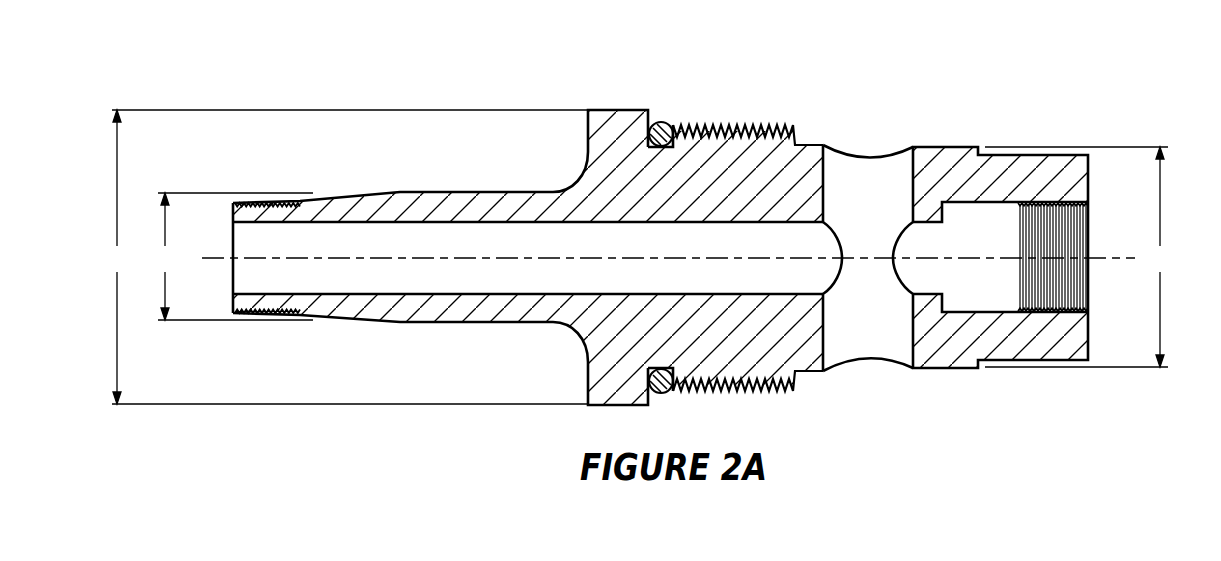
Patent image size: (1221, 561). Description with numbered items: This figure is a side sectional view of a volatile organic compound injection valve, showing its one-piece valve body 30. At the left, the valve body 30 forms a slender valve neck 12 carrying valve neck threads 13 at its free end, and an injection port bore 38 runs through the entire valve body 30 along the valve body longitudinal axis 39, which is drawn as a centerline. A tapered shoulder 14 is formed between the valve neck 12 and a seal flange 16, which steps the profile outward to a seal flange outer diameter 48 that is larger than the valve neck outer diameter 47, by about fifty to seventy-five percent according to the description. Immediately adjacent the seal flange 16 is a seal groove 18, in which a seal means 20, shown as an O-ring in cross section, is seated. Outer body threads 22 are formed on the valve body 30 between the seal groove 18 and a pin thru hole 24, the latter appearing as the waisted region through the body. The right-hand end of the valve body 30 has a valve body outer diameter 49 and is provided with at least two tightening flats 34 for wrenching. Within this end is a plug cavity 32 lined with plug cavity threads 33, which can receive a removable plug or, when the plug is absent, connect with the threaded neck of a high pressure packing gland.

The valve body 30 is at (204, 76).
The valve neck 12 is at (452, 191).
The valve neck threads 13 is at (266, 198).
The tapered shoulder 14 is at (577, 178).
The seal flange 16 is at (618, 108).
The seal groove 18 is at (662, 366).
The seal means 20 is at (660, 121).
The outer body threads 22 is at (756, 126).
The pin thru hole 24 is at (869, 151).
The plug cavity 32 is at (1094, 243).
The plug cavity threads 33 is at (1045, 315).
The tightening flats 34 is at (1040, 153).
The injection port bore 38 is at (232, 242).
The valve body longitudinal axis 39 is at (1113, 262).
The valve neck outer diameter 47 is at (233, 256).
The seal flange outer diameter 48 is at (346, 257).
The valve body outer diameter 49 is at (1078, 257).